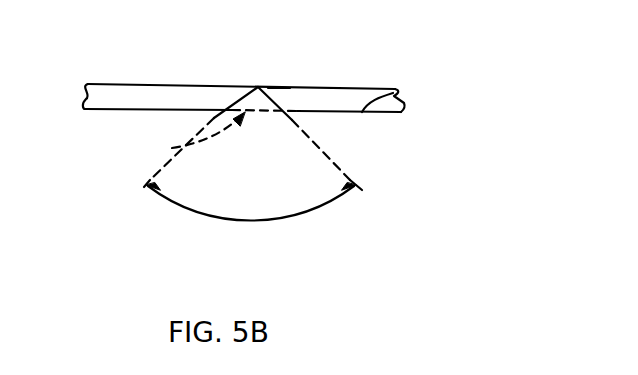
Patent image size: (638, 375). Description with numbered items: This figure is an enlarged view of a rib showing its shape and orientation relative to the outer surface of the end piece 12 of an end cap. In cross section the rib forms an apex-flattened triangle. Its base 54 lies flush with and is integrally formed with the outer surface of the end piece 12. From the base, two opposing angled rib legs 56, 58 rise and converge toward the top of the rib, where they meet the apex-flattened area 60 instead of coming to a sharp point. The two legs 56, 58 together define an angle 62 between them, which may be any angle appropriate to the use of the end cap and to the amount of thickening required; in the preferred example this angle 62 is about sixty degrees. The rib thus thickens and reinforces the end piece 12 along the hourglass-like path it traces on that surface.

The end piece 12 is at (390, 93).
The base 54 is at (172, 148).
The angled rib leg 56 is at (278, 89).
The angled rib leg 58 is at (239, 103).
The apex-flattened area 60 is at (258, 87).
The angle 62 is at (247, 222).